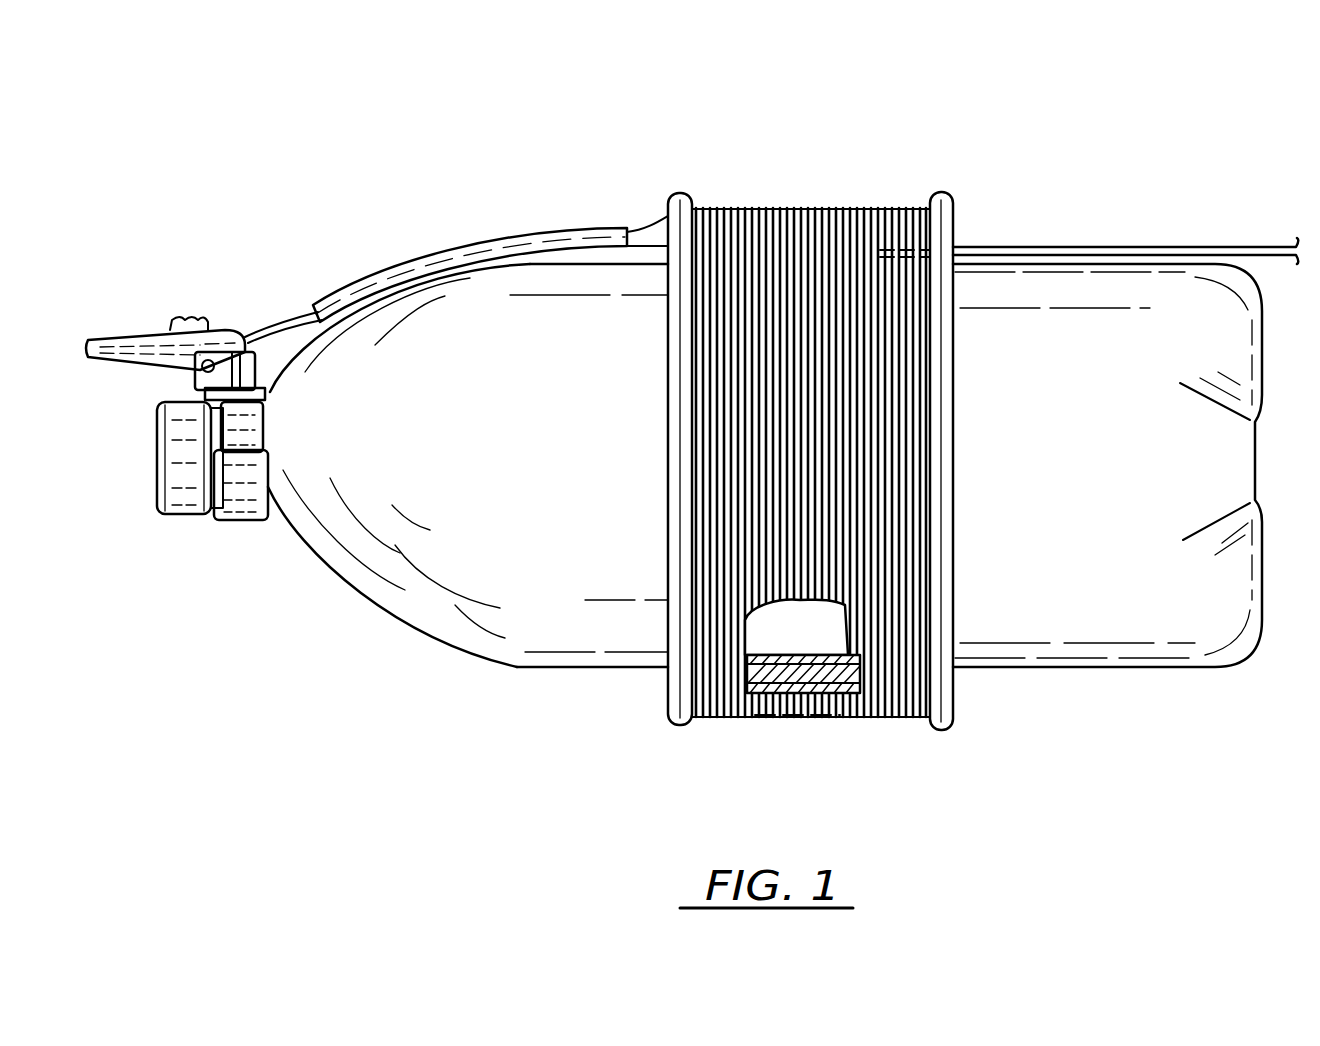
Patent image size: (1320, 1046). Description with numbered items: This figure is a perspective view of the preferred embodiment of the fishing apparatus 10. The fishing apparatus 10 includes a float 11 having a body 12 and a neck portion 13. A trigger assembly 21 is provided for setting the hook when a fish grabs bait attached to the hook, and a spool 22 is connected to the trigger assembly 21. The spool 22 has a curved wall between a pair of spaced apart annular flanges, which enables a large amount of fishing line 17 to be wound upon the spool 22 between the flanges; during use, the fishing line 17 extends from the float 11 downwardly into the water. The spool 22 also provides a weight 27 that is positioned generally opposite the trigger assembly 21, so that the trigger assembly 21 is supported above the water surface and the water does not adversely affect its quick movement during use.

The fishing apparatus 10 is at (377, 150).
The float 11 is at (1262, 458).
The body 12 is at (1070, 480).
The neck portion 13 is at (280, 437).
The fishing line 17 is at (280, 330).
The trigger assembly 21 is at (158, 285).
The spool 22 is at (668, 693).
The weight 27 is at (832, 695).